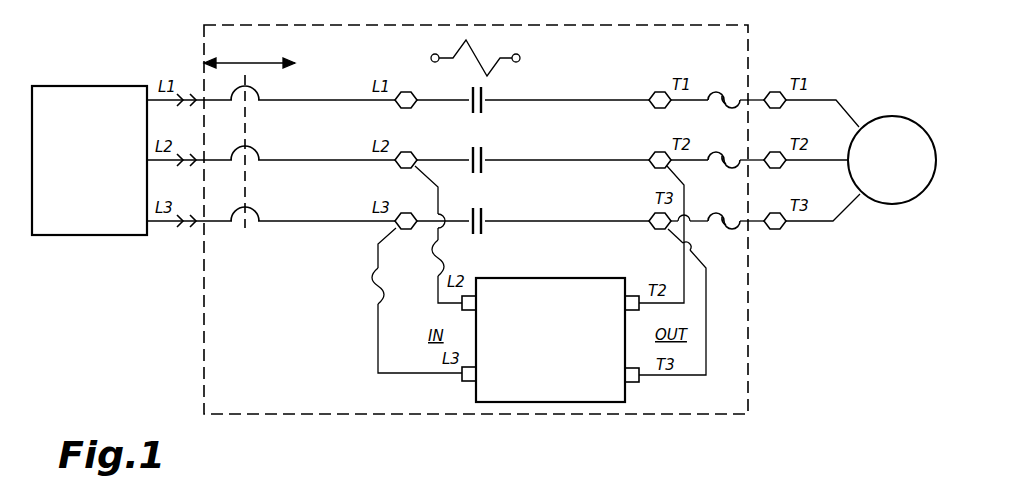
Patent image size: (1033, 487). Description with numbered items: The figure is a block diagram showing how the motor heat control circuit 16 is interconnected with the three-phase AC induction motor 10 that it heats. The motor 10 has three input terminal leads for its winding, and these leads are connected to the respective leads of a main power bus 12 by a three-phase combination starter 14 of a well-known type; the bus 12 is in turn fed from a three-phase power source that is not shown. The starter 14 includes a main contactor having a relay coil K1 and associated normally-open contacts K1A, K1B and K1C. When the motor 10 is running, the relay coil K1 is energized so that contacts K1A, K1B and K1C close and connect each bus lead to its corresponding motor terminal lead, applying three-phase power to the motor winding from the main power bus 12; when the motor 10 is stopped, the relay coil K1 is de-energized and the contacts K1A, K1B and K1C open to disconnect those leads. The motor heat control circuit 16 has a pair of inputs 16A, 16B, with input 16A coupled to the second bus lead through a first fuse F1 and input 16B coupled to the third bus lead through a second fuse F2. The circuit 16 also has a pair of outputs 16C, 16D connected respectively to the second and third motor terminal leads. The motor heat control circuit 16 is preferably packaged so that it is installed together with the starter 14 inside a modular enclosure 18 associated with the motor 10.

The three-phase AC induction motor 10 is at (904, 116).
The main power bus 12 is at (111, 86).
The three-phase combination starter 14 is at (533, 135).
The motor heat control circuit 16 is at (550, 323).
The input 16A is at (473, 307).
The input 16B is at (474, 364).
The output 16C is at (610, 307).
The output 16D is at (613, 377).
The modular enclosure 18 is at (752, 378).
The relay coil K1 is at (505, 54).
The normally-open contacts K1A is at (502, 93).
The normally-open contacts K1B is at (489, 155).
The normally-open contacts K1C is at (484, 216).
The first fuse F1 is at (441, 234).
The second fuse F2 is at (417, 300).